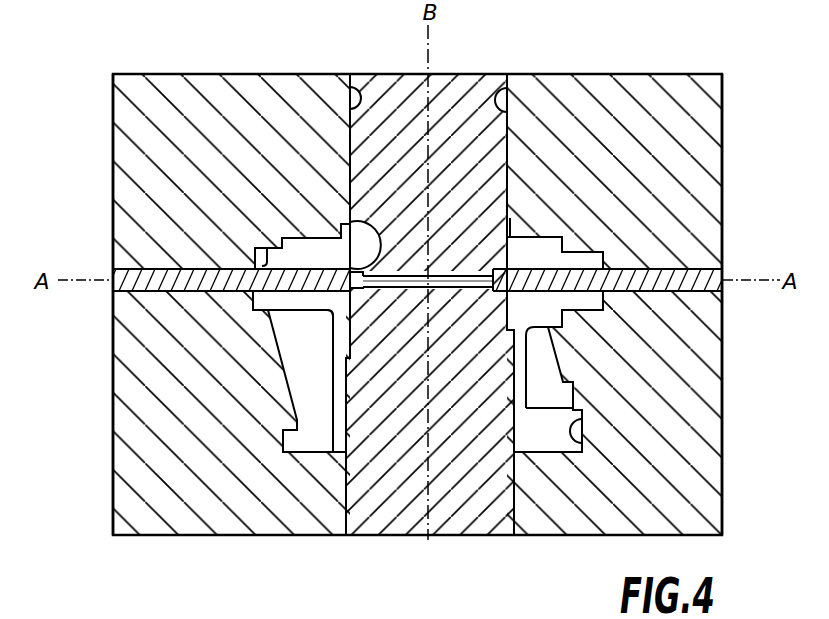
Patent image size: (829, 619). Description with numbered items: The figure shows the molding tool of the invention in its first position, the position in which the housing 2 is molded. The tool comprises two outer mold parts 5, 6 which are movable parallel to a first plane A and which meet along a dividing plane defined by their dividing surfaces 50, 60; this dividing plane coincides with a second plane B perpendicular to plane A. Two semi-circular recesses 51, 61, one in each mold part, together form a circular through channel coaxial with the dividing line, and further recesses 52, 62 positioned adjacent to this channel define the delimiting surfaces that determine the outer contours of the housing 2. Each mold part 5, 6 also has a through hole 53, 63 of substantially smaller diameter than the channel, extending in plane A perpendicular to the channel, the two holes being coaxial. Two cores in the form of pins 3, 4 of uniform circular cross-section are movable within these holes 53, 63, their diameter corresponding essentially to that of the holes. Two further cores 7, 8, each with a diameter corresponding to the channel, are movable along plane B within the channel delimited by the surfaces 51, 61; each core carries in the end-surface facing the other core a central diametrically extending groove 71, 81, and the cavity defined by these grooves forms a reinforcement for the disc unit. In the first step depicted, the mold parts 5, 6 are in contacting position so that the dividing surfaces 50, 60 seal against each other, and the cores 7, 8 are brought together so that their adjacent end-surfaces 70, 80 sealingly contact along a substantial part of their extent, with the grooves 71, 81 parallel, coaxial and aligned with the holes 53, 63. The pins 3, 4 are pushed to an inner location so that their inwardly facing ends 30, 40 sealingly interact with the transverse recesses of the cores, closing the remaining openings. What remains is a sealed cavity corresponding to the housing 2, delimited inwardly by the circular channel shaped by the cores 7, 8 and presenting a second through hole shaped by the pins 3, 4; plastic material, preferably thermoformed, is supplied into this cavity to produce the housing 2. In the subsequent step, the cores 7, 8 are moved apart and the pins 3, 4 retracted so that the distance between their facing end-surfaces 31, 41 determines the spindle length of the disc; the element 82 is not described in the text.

The housing 2 is at (295, 412).
The core (pin) 3 is at (658, 278).
The core (pin) 4 is at (142, 290).
The outer mold part 5 is at (624, 85).
The outer mold part 6 is at (156, 82).
The core 7 is at (363, 130).
The core 8 is at (430, 305).
The inwardly facing end of pin 30 is at (515, 266).
The end-surface of pin 31 is at (507, 305).
The inwardly facing end of pin 40 is at (350, 223).
The end-surface of pin 41 is at (345, 300).
The dividing surface 50 is at (426, 113).
The semi-circular recess 51 is at (488, 106).
The recess 52 is at (585, 432).
The through hole 53 is at (565, 294).
The dividing surface 60 is at (430, 128).
The semi-circular recess 61 is at (362, 108).
The recess 62 is at (345, 262).
The through hole 63 is at (268, 294).
The dividing surface (end-surface) of core 70 is at (452, 290).
The diametrically extending groove 71 is at (400, 275).
The dividing surface (end-surface) of core 80 is at (437, 272).
The diametrically extending groove 81 is at (403, 287).
The left membrane section 82 is at (258, 260).